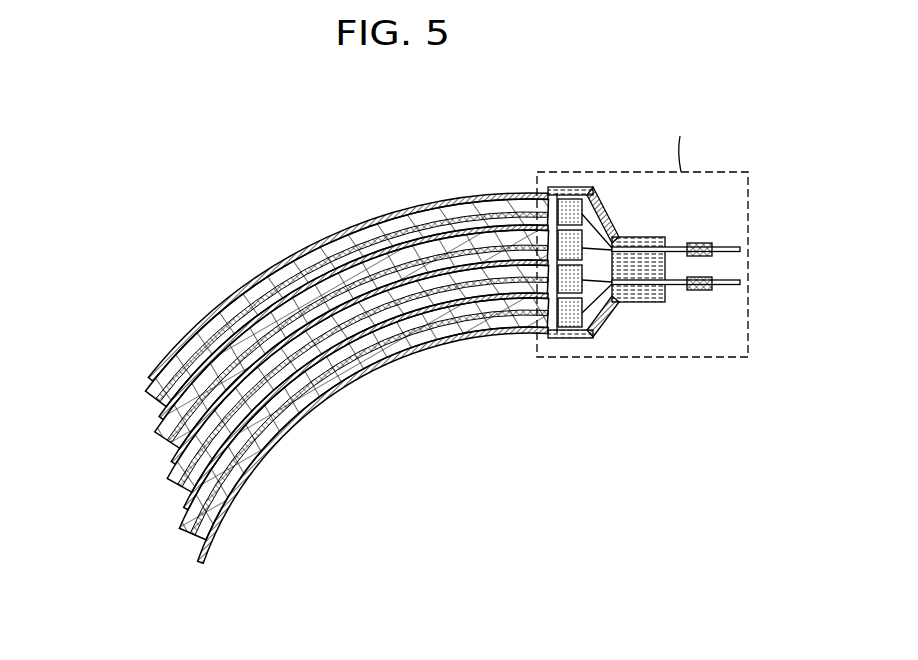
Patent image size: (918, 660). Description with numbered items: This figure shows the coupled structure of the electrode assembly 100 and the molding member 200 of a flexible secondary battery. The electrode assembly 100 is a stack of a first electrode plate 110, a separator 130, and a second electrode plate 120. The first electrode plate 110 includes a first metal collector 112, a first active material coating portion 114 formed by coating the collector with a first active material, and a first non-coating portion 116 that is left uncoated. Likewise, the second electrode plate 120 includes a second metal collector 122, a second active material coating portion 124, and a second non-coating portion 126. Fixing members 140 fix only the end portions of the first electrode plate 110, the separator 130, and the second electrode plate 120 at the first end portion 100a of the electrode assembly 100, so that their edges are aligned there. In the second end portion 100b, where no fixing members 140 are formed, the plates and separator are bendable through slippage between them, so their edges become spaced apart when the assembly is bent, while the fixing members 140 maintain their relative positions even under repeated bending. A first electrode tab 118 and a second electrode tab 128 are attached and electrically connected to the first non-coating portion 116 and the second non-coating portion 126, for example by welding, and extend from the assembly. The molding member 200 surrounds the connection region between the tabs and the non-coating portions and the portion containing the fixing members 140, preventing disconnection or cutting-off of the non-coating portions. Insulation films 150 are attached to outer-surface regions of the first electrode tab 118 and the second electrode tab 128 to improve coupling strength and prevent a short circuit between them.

The electrode assembly 100 is at (226, 272).
The first end portion 100a is at (621, 392).
The second end portion 100b is at (236, 563).
The first electrode plate 110 is at (103, 518).
The first metal collector 112 is at (170, 467).
The first active material coating portion 114 is at (163, 455).
The first non-coating portion 116 is at (601, 224).
The first electrode tab 118 is at (741, 250).
The second electrode plate 120 is at (202, 608).
The second metal collector 122 is at (195, 498).
The second active material coating portion 124 is at (187, 524).
The second non-coating portion 126 is at (610, 294).
The second electrode tab 128 is at (741, 283).
The separator 130 is at (175, 490).
The fixing members 140 is at (575, 312).
The insulation films 150 is at (702, 242).
The molding member 200 is at (574, 187).